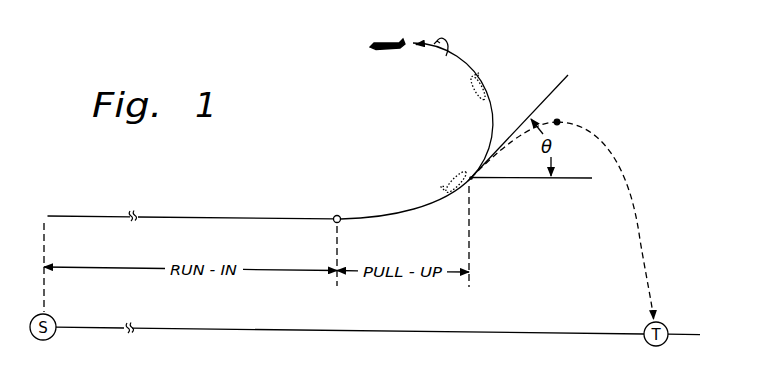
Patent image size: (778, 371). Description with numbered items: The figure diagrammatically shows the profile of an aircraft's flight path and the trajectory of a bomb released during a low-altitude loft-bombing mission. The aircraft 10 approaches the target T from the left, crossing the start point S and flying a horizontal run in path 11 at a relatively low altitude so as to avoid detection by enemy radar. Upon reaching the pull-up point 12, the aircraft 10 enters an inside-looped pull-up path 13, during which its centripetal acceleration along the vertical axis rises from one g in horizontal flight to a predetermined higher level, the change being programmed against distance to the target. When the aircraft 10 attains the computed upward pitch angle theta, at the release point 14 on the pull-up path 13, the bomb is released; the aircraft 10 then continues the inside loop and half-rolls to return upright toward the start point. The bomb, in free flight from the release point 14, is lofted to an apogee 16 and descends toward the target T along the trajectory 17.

The aircraft 10 is at (374, 46).
The run in path 11 is at (113, 218).
The pull-up point 12 is at (336, 216).
The pull-up path 13 is at (410, 212).
The release point 14 is at (472, 178).
The apogee 16 is at (560, 119).
The trajectory 17 is at (642, 238).